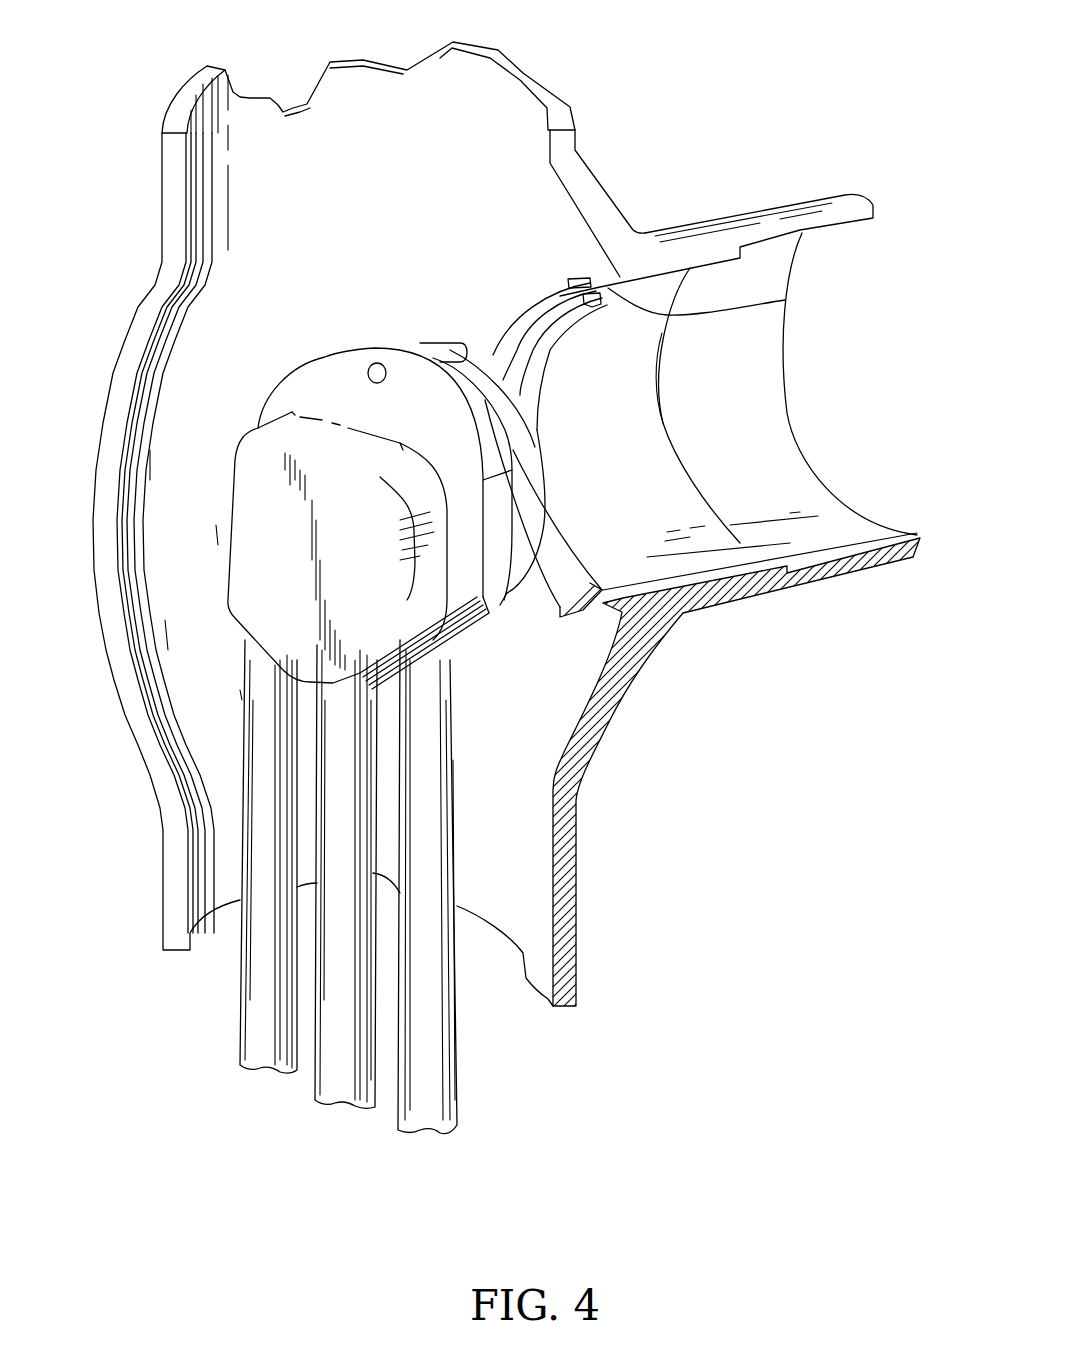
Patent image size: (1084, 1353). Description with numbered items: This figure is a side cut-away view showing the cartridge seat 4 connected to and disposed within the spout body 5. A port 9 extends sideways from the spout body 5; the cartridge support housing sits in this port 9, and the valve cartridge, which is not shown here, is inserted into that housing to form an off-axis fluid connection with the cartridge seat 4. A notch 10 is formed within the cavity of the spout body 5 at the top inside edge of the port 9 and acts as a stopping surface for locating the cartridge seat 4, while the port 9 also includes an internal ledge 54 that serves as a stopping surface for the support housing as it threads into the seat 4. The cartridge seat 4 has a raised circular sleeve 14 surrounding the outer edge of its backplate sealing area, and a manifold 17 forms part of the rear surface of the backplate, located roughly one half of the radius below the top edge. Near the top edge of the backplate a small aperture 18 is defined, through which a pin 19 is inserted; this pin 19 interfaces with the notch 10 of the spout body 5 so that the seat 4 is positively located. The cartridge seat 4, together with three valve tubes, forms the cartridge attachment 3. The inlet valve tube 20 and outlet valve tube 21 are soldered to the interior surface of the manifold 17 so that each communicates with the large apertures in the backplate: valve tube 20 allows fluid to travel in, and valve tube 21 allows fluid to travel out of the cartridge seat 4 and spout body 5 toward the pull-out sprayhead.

The cartridge attachment 3 is at (158, 487).
The cartridge seat 4 is at (552, 440).
The spout body 5 is at (375, 120).
The port 9 is at (832, 205).
The notch 10 is at (787, 301).
The raised circular sleeve 14 is at (487, 610).
The manifold 17 is at (360, 513).
The small aperture 18 is at (360, 377).
The pin 19 is at (453, 337).
The inlet valve tube 20 is at (250, 1073).
The outlet valve tube 21 is at (327, 1107).
The internal ledge 54 is at (677, 452).